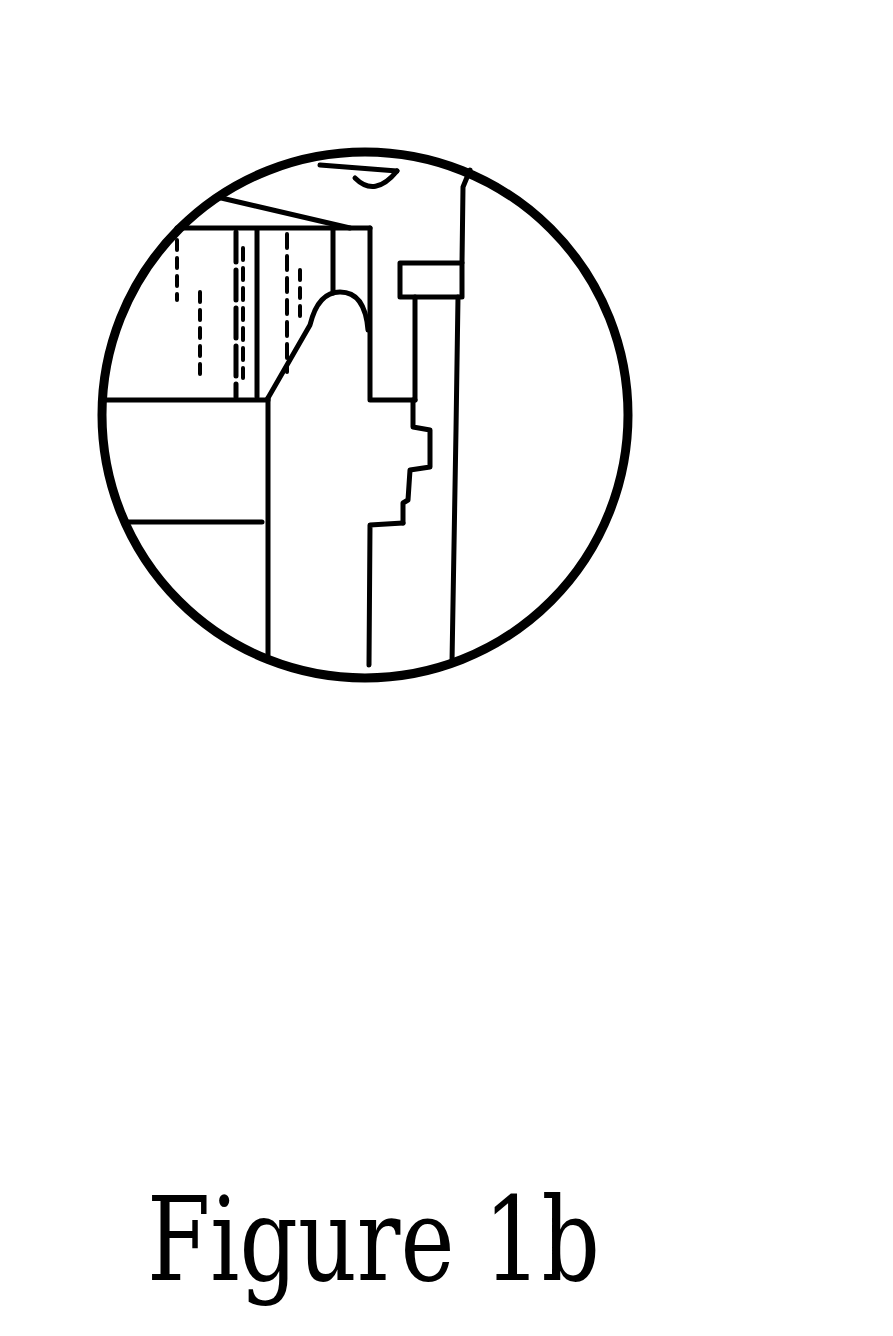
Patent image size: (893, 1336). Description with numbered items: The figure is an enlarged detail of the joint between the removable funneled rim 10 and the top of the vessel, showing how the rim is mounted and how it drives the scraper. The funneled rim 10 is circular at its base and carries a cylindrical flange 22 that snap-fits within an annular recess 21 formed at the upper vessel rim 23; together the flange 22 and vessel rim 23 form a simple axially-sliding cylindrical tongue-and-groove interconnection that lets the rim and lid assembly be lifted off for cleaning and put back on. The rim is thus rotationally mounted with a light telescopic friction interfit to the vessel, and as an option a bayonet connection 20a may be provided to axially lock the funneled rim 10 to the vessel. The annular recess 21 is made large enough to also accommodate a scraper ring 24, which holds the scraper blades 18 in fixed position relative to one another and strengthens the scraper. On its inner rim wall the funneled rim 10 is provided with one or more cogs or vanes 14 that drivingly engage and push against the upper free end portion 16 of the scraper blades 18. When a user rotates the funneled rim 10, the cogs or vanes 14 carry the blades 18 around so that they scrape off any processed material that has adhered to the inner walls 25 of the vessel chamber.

The funneled rim 10 is at (425, 205).
The cogs or vanes 14 is at (197, 280).
The upper free end portion 16 is at (318, 340).
The scraper blades 18 is at (323, 613).
The bayonet connection 20a is at (417, 267).
The annular recess 21 is at (420, 380).
The cylindrical flange 22 is at (393, 350).
The upper vessel rim 23 is at (447, 293).
The scraper ring 24 is at (200, 435).
The inner walls 25 is at (255, 567).